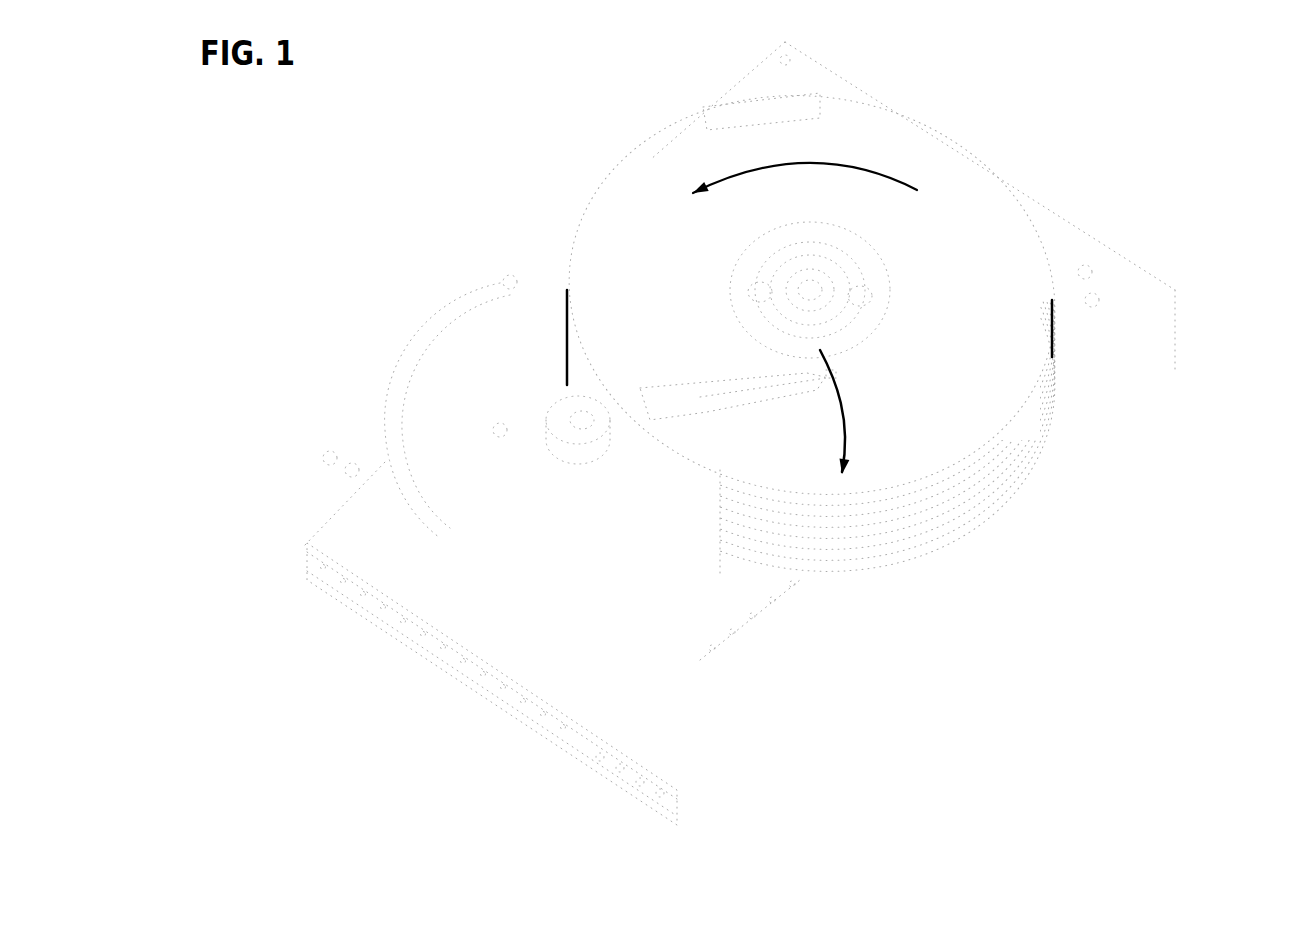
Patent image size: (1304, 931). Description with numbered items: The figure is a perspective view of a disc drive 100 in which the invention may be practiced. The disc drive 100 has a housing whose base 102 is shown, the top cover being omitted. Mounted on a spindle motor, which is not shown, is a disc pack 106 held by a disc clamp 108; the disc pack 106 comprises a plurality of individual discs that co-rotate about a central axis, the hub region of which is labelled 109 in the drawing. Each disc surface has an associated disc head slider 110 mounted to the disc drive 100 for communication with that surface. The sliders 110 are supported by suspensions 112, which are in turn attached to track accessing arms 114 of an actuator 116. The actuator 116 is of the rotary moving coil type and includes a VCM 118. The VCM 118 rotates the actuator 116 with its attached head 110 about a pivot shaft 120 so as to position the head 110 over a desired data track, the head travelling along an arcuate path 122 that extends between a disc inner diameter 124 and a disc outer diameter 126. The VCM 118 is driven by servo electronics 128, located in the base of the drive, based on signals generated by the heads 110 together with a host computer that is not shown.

The disc drive 100 is at (1040, 158).
The base 102 is at (1127, 300).
The disc pack 106 is at (909, 161).
The disc clamp 108 is at (775, 268).
The spindle hub 109 is at (813, 287).
The disc head slider 110 is at (845, 375).
The suspension 112 is at (787, 378).
The track accessing arm 114 is at (708, 410).
The actuator 116 is at (566, 394).
The VCM 118 is at (445, 381).
The pivot shaft 120 is at (587, 412).
The arcuate path 122 is at (848, 425).
The disc inner diameter 124 is at (887, 312).
The disc outer diameter 126 is at (1052, 300).
The servo electronics 128 is at (758, 590).